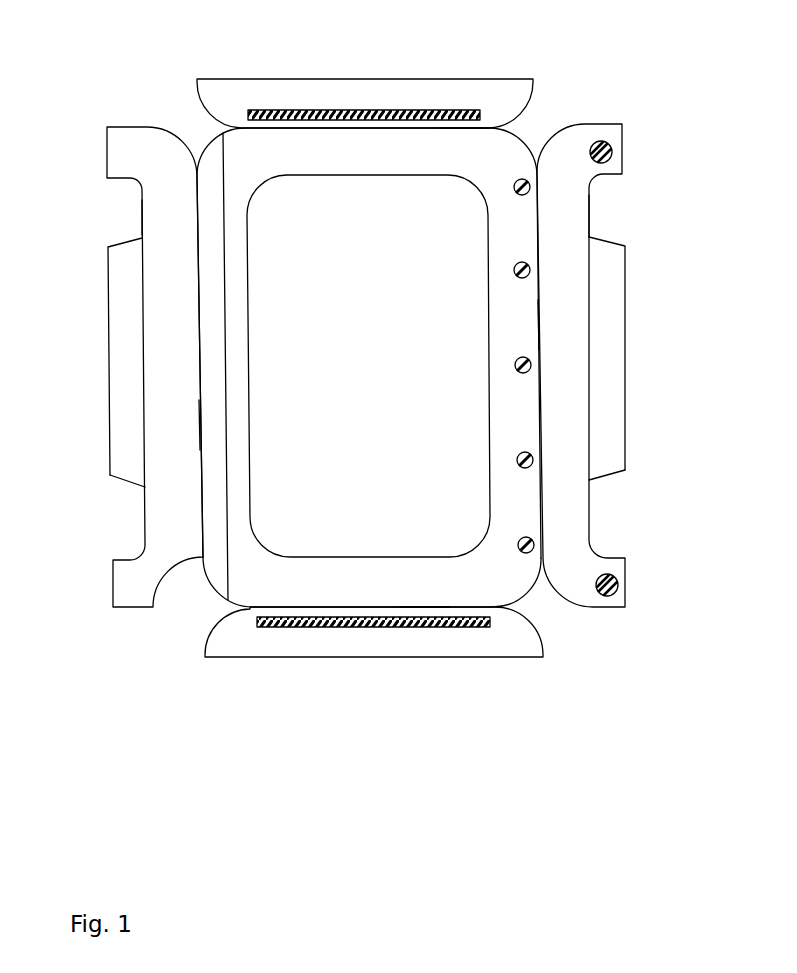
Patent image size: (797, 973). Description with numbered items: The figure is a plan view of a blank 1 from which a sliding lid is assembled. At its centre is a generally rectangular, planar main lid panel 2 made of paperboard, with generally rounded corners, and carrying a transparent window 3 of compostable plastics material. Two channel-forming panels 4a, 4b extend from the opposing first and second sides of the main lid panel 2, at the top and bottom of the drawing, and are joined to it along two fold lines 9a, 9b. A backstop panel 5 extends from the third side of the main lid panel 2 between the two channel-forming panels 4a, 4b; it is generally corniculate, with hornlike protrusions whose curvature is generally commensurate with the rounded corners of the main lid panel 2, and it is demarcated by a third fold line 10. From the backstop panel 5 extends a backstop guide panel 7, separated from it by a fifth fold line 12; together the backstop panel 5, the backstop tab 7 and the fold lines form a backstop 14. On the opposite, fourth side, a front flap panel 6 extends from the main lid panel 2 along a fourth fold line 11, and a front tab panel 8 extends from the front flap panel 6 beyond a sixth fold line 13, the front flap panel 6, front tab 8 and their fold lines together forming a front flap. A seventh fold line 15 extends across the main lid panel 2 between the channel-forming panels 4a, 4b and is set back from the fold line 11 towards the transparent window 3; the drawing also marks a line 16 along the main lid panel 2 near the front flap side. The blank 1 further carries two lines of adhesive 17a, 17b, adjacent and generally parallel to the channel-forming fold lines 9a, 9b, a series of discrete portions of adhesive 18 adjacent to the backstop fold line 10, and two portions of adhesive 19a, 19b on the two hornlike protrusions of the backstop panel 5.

The blank 1 is at (517, 137).
The main lid panel 2 is at (507, 582).
The transparent window 3 is at (280, 295).
The channel-forming panel 4a is at (250, 93).
The channel-forming panel 4b is at (253, 643).
The backstop panel 5 is at (562, 152).
The front flap panel 6 is at (122, 143).
The backstop guide panel 7 is at (608, 285).
The front tab panel 8 is at (120, 401).
The fold line 9a is at (465, 125).
The fold line 9b is at (417, 608).
The third fold line 10 is at (540, 325).
The fourth fold line 11 is at (200, 428).
The fifth fold line 12 is at (592, 392).
The sixth fold line 13 is at (145, 475).
The backstop 14 is at (593, 220).
The seventh fold line 15 is at (142, 217).
The frame inner line 16 is at (223, 238).
The line of adhesive 17a is at (363, 107).
The line of adhesive 17b is at (353, 627).
The discrete portions of adhesive 18 is at (533, 462).
The portion of adhesive 19a is at (612, 143).
The portion of adhesive 19b is at (619, 588).